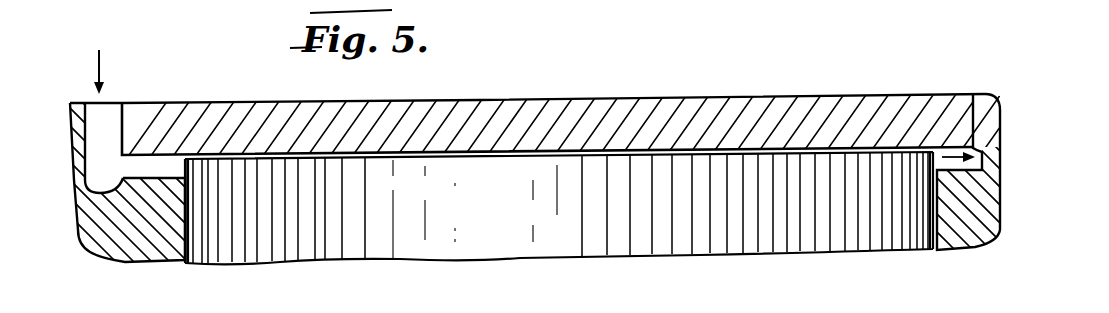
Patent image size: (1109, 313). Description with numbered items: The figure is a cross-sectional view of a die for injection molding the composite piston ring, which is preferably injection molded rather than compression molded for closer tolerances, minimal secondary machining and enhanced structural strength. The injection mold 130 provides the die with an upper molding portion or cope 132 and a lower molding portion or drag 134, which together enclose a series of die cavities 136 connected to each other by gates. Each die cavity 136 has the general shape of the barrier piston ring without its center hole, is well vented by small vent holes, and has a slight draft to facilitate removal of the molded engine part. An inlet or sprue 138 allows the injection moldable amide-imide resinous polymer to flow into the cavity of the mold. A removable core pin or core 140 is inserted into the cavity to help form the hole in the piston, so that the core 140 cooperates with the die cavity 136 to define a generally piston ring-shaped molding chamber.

The injection mold 130 is at (787, 87).
The upper molding portion or cope 132 is at (188, 103).
The lower molding portion or drag 134 is at (126, 261).
The die cavity 136 is at (973, 96).
The inlet or sprue 138 is at (123, 114).
The removable core pin or core 140 is at (614, 256).